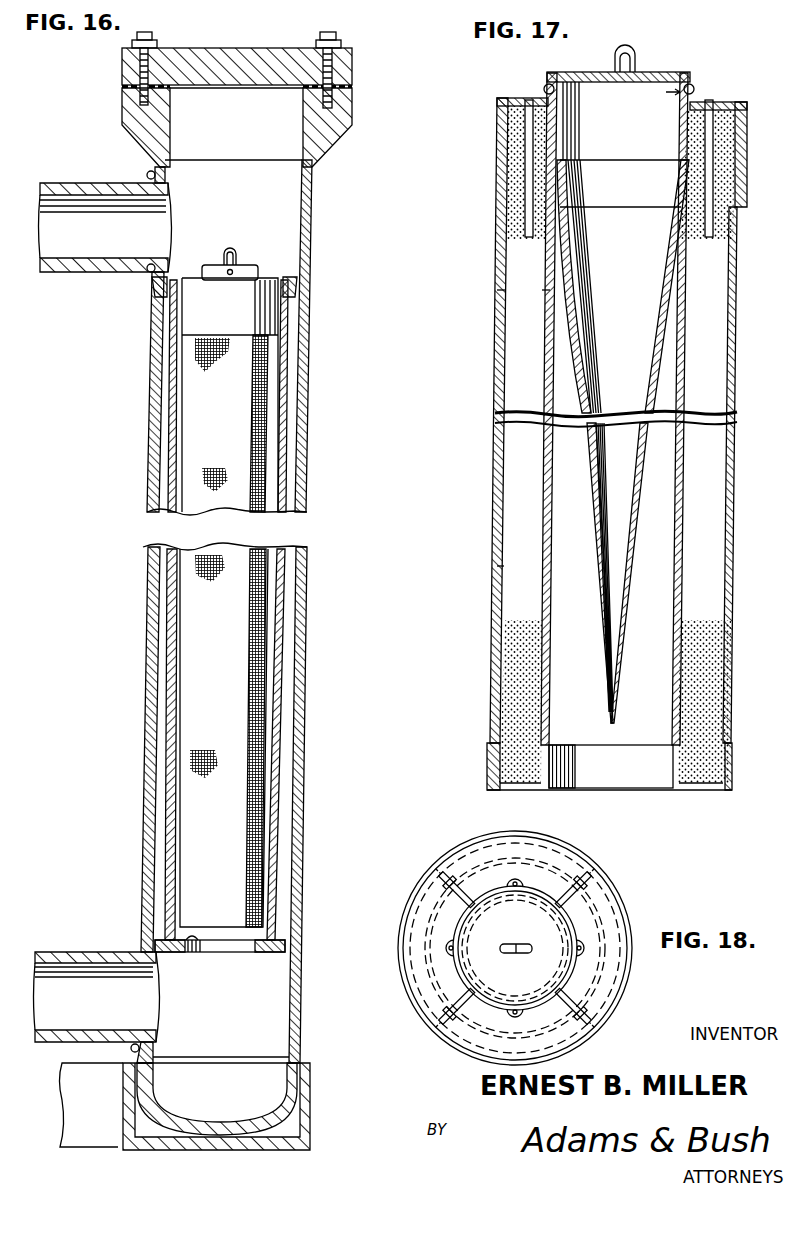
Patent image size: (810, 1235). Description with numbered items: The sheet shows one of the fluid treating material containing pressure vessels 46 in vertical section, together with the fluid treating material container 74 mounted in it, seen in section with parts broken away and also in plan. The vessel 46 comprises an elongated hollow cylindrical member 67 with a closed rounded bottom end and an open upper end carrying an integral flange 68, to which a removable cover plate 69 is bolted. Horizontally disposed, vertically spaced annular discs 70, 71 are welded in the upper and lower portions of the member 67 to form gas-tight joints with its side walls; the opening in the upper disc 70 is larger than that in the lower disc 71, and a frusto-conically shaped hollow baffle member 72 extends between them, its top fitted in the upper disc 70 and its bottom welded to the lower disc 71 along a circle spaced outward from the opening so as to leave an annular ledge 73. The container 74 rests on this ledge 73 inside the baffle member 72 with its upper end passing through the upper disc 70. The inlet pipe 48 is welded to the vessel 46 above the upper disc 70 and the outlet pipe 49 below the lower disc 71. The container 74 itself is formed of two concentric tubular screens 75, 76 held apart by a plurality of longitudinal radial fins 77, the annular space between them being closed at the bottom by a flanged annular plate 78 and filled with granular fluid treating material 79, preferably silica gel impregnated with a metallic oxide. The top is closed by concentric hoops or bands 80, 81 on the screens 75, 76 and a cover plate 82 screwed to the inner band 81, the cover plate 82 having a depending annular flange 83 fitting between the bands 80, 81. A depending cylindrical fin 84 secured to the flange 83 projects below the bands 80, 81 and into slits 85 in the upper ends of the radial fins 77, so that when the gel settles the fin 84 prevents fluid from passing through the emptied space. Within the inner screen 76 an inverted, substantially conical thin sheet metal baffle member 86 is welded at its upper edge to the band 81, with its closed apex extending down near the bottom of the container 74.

In FIG. 16, the pressure vessel 46 is at (329, 453).
In FIG. 16, the inlet pipe 48 is at (72, 184).
In FIG. 16, the outlet pipe 49 is at (63, 953).
In FIG. 16, the elongated hollow cylindrical member 67 is at (300, 693).
In FIG. 16, the integral flange 68 is at (345, 120).
In FIG. 16, the removable cover plate 69 is at (222, 54).
In FIG. 16, the upper annular disc 70 is at (323, 265).
In FIG. 16, the lower annular disc 71 is at (268, 953).
In FIG. 16, the frusto-conically shaped hollow baffle member 72 is at (170, 424).
In FIG. 16, the annular ledge 73 is at (192, 954).
In FIG. 16, the fluid treating material container 74 is at (228, 845).
In FIG. 17, the fluid treating material container 74 is at (490, 562).
In FIG. 17, the outer tubular screen 75 is at (497, 293).
In FIG. 17, the inner tubular screen 76 is at (548, 293).
In FIG. 18, the longitudinal radial fins 77 is at (450, 858).
In FIG. 17, the flanged annular plate 78 is at (500, 788).
In FIG. 17, the granular fluid treating material 79 is at (497, 722).
In FIG. 17, the outer hoop or band 80 is at (497, 140).
In FIG. 17, the inner hoop or band 81 is at (557, 143).
In FIG. 17, the cover plate 82 is at (657, 74).
In FIG. 17, the depending annular flange 83 is at (520, 89).
In FIG. 17, the depending cylindrical fin 84 is at (533, 126).
In FIG. 18, the depending cylindrical fin 84 is at (420, 949).
In FIG. 18, the slits 85 is at (445, 898).
In FIG. 17, the inverted conically-shaped baffle member 86 is at (597, 498).